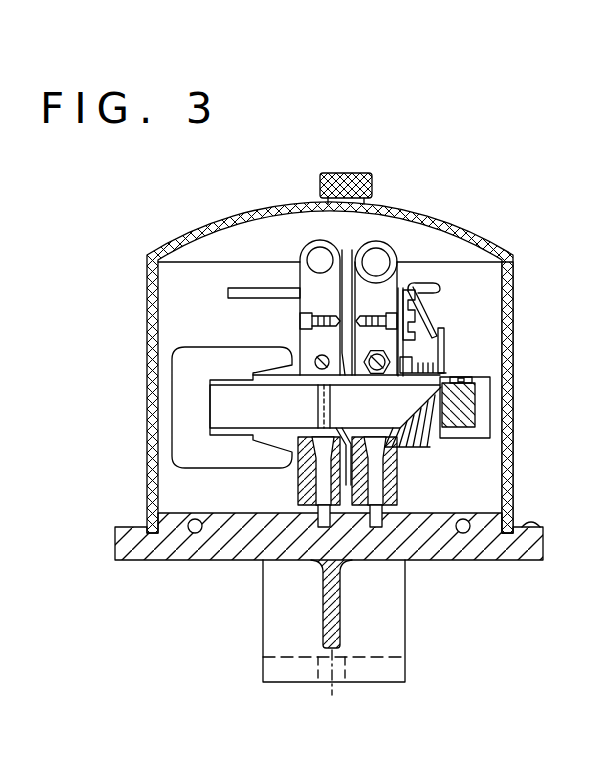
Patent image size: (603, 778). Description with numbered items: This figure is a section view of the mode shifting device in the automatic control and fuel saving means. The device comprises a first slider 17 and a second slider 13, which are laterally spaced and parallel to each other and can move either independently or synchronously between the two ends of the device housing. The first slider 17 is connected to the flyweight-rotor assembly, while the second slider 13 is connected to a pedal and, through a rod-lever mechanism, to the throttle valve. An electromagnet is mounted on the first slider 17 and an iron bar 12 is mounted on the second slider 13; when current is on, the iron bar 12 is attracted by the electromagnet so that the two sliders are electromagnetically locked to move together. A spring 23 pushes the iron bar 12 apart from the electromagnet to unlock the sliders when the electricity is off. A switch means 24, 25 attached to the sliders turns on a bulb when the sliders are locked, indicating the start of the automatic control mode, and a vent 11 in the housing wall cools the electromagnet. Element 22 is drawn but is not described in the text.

The vent 11 is at (232, 295).
The iron bar 12 is at (466, 428).
The second slider 13 is at (385, 243).
The first slider 17 is at (310, 247).
The armature bar 22 is at (218, 428).
The spring 23 is at (426, 446).
The switch means 24 is at (446, 358).
The switch means 25 is at (434, 316).